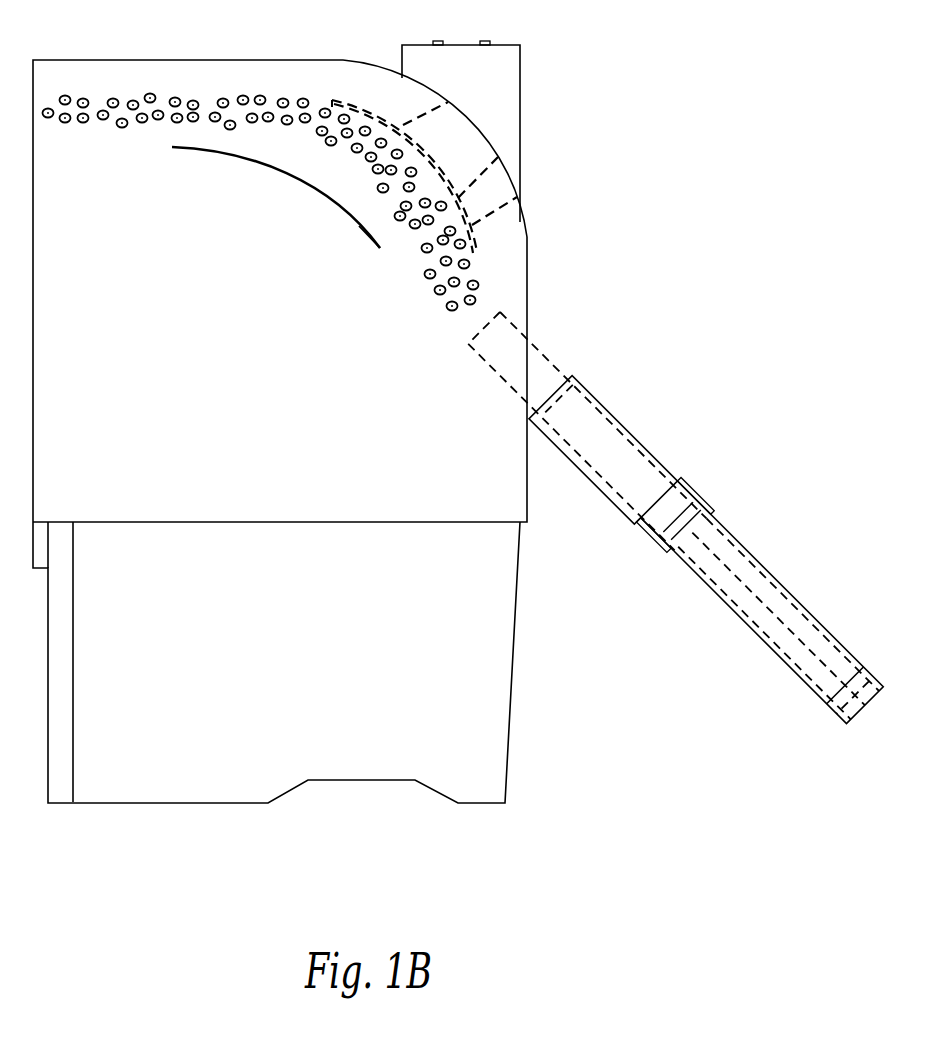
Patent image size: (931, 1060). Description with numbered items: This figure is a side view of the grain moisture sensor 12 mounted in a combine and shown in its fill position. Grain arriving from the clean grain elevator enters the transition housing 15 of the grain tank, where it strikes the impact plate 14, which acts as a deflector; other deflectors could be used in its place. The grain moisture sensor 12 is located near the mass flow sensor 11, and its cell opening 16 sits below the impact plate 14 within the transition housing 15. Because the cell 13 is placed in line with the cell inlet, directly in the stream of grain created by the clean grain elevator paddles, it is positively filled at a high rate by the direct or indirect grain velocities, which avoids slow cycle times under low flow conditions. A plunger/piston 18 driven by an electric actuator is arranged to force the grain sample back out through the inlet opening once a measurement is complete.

The mass flow sensor 11 is at (522, 73).
The grain moisture sensor 12 is at (665, 470).
The cell 13 is at (591, 415).
The impact plate 14 is at (517, 197).
The transition housing 15 is at (185, 60).
The cell opening 16 is at (528, 403).
The plunger/piston 18 is at (640, 528).